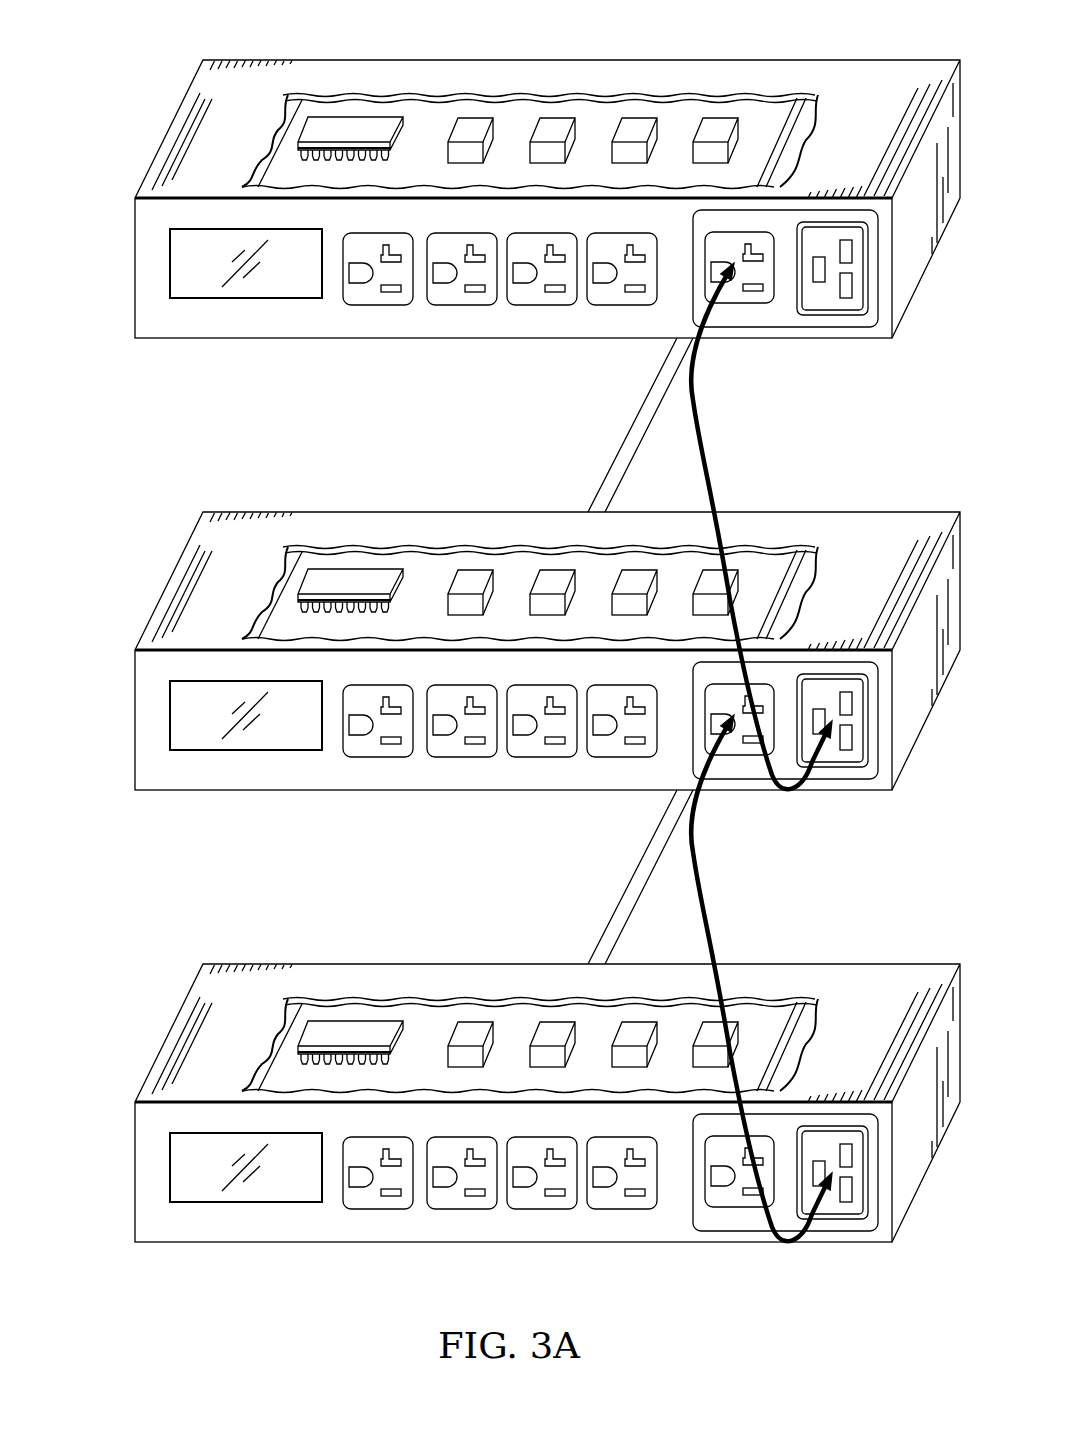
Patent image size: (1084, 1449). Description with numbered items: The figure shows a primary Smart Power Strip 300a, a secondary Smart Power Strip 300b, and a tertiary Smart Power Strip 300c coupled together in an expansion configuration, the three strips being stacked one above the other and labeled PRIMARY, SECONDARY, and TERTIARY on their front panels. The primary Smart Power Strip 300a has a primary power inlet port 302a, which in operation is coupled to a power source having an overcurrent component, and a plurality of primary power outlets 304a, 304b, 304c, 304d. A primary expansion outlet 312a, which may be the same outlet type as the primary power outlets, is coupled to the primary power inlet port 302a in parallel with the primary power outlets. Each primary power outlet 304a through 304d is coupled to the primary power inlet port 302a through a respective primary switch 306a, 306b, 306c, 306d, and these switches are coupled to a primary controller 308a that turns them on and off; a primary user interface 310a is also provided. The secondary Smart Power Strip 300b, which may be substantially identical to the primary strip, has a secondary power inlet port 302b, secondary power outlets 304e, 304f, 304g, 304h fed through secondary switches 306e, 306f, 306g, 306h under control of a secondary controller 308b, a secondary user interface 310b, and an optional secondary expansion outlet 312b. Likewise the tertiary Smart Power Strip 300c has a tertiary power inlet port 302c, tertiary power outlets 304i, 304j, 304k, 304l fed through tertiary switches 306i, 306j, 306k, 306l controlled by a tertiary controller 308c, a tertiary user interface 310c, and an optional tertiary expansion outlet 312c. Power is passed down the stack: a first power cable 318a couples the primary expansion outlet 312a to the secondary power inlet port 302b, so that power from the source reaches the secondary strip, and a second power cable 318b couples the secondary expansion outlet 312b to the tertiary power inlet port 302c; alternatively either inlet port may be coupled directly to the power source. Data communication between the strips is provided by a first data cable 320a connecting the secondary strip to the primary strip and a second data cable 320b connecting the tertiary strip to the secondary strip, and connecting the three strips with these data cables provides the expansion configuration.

The primary Smart Power Strip 300a is at (137, 137).
The secondary Smart Power Strip 300b is at (502, 651).
The tertiary Smart Power Strip 300c is at (502, 1103).
The primary power inlet port 302a is at (837, 316).
The secondary power inlet port 302b is at (842, 760).
The tertiary power inlet port 302c is at (844, 1214).
The primary power outlet 304a is at (378, 304).
The primary power outlet 304b is at (462, 304).
The primary power outlet 304c is at (542, 304).
The primary power outlet 304d is at (622, 304).
The secondary power outlet 304e is at (367, 765).
The secondary power outlet 304f is at (449, 765).
The secondary power outlet 304g is at (530, 765).
The secondary power outlet 304h is at (611, 765).
The tertiary power outlet 304i is at (368, 1220).
The tertiary power outlet 304j is at (451, 1220).
The tertiary power outlet 304k is at (529, 1220).
The tertiary power outlet 304l is at (612, 1220).
The primary switch 306a is at (473, 128).
The primary switch 306b is at (553, 128).
The primary switch 306c is at (638, 128).
The primary switch 306d is at (725, 128).
The secondary switch 306e is at (458, 534).
The secondary switch 306f is at (541, 534).
The secondary switch 306g is at (652, 538).
The secondary switch 306h is at (798, 541).
The tertiary switch 306i is at (458, 986).
The tertiary switch 306j is at (541, 986).
The tertiary switch 306k is at (652, 990).
The tertiary switch 306l is at (792, 993).
The primary controller 308a is at (350, 128).
The secondary controller 308b is at (350, 532).
The tertiary controller 308c is at (350, 984).
The primary user interface 310a is at (168, 262).
The secondary user interface 310b is at (183, 726).
The tertiary user interface 310c is at (183, 1179).
The primary expansion outlet 312a is at (738, 304).
The secondary expansion outlet 312b is at (748, 766).
The tertiary expansion outlet 312c is at (726, 1219).
The first power cable 318a is at (705, 448).
The second power cable 318b is at (705, 900).
The first data cable 320a is at (638, 416).
The second data cable 320b is at (638, 868).